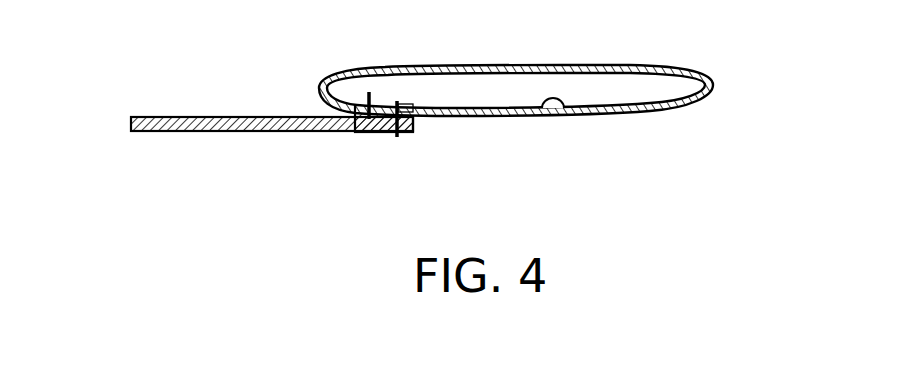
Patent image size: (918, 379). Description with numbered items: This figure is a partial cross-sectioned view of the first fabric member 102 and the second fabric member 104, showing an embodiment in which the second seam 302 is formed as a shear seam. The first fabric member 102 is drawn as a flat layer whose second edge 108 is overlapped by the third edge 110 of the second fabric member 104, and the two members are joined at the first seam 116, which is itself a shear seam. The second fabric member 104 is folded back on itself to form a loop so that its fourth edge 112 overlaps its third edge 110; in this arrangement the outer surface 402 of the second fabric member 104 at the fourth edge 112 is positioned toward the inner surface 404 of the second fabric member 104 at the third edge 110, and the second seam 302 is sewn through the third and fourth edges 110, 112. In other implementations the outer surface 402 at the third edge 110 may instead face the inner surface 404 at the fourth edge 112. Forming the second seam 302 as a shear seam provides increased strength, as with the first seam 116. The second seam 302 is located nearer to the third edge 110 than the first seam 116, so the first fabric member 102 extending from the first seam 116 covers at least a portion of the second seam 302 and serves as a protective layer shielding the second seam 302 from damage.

The first fabric member 102 is at (184, 117).
The second fabric member 104 is at (536, 63).
The second edge 108 is at (416, 127).
The third edge 110 is at (355, 108).
The fourth edge 112 is at (408, 98).
The first seam 116 is at (396, 134).
The second seam 302 is at (368, 92).
The outer surface 402 is at (538, 65).
The inner surface 404 is at (570, 114).